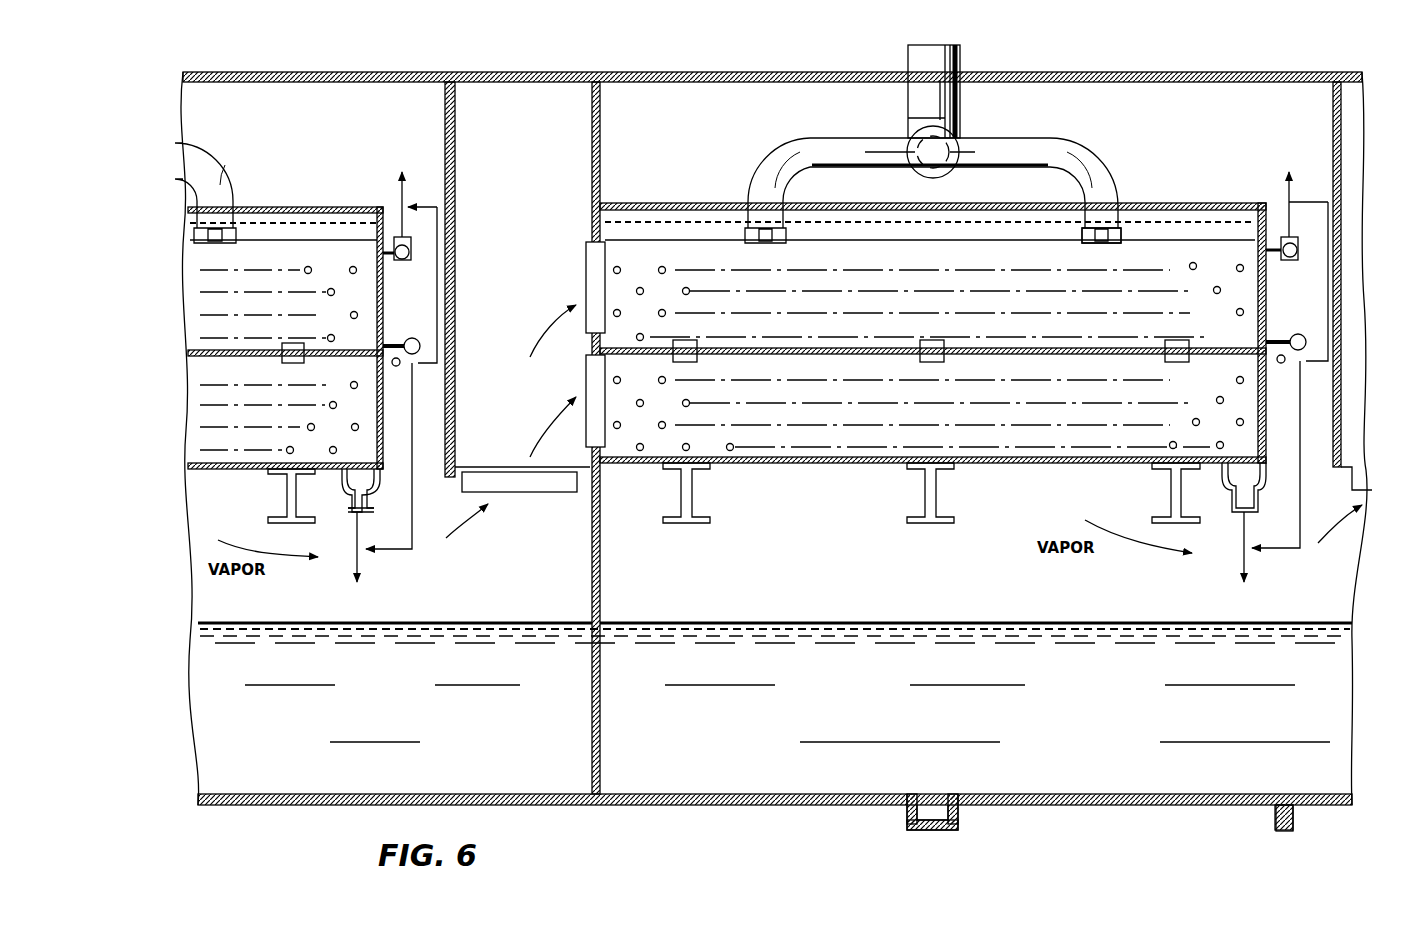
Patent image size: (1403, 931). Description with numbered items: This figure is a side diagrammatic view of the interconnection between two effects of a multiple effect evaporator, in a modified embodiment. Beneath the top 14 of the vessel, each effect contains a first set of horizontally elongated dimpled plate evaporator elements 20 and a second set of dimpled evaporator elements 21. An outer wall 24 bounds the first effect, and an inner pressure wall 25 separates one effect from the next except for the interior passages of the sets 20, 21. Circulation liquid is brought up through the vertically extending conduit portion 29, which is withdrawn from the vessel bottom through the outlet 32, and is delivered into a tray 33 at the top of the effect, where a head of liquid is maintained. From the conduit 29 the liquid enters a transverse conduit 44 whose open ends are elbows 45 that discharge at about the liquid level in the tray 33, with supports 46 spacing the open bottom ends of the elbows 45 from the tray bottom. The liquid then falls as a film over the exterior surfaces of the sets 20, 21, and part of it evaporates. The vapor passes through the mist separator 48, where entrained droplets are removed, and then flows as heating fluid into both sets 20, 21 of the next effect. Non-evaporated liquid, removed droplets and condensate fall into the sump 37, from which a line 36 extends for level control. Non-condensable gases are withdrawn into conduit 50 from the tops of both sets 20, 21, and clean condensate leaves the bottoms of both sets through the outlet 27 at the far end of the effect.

The top 14 is at (688, 803).
The first set of horizontally elongated dimpled plate evaporator elements 20 is at (365, 297).
The second set of horizontally elongated dimpled evaporator elements 21 is at (362, 415).
The outer wall 24 is at (456, 240).
The inner pressure wall 25 is at (592, 188).
The outlet 27 is at (368, 553).
The vertically extending conduit portion 29 is at (955, 68).
The outlet 32 is at (907, 815).
The tray 33 is at (1186, 170).
The line 36 is at (1276, 820).
The circulation liquid collecting bottom portion (sump) 37 is at (238, 608).
The transverse conduit 44 is at (1010, 150).
The elbows 45 is at (232, 190).
The supports 46 is at (1085, 230).
The demistor (mist separator) 48 is at (530, 498).
The conduit 50 is at (400, 190).